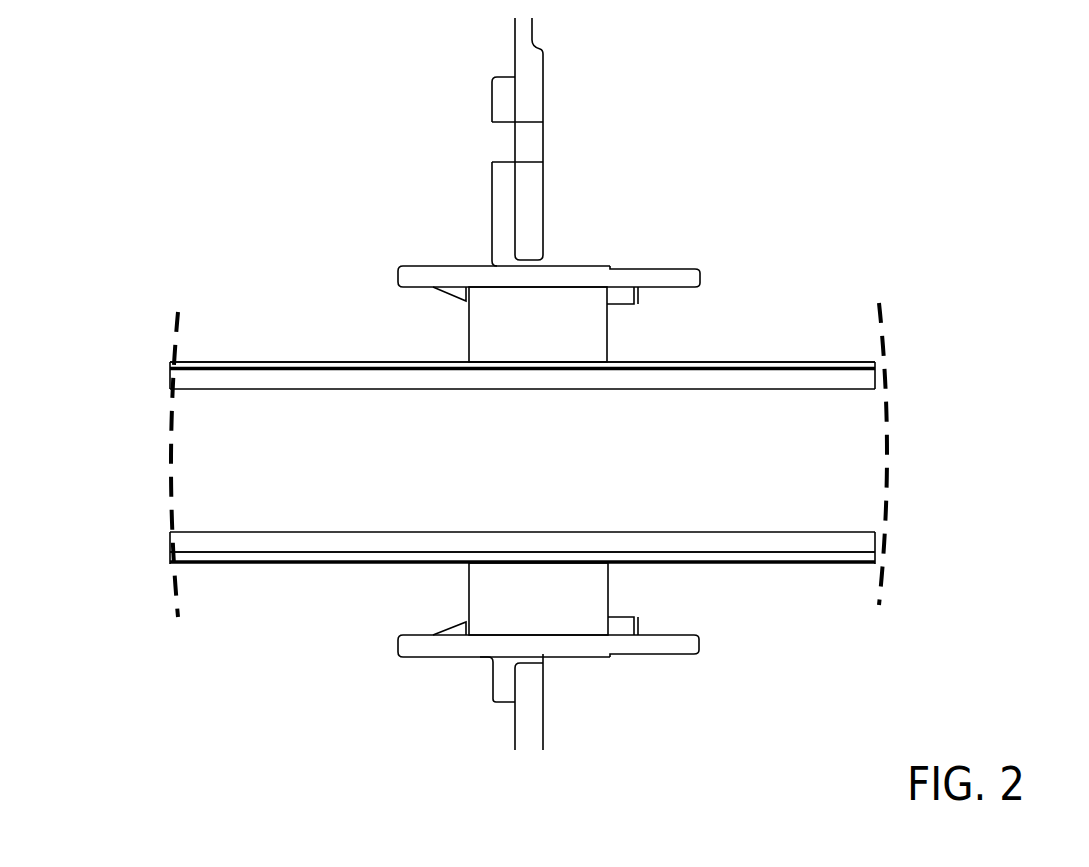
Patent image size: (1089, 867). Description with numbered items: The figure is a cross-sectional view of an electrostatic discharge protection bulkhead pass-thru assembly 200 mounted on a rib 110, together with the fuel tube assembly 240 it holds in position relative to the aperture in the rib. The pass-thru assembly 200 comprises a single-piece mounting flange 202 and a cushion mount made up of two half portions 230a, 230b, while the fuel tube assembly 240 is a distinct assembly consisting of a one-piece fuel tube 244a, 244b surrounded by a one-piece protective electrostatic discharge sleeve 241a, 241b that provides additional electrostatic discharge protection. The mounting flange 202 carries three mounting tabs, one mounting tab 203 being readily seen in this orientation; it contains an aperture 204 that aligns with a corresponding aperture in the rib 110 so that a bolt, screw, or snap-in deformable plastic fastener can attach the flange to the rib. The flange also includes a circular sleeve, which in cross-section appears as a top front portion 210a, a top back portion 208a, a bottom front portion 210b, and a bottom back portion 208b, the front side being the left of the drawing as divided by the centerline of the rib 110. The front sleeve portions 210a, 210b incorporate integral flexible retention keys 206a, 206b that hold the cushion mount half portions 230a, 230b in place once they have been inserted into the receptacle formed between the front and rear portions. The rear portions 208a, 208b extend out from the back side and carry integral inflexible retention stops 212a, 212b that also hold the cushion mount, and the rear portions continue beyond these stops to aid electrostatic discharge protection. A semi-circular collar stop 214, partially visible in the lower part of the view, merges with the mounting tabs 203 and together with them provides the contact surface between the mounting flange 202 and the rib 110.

The rib 110 is at (543, 90).
The electrostatic discharge protection bulkhead pass-thru assembly 200 is at (266, 149).
The mounting flange 202 is at (491, 227).
The mounting tab 203 is at (490, 114).
The aperture 204 is at (532, 147).
The flexible retention key 206a is at (452, 302).
The flexible retention key 206b is at (462, 627).
The top, back portion of the sleeve 208a is at (650, 268).
The bottom, back portion of the sleeve 208b is at (662, 655).
The top, front portion of the sleeve 210a is at (443, 266).
The bottom, front portion of the sleeve 210b is at (400, 652).
The inflexible retention stop 212a is at (638, 304).
The inflexible retention stop 212b is at (638, 625).
The collar stop 214 is at (492, 683).
The cushion mount half portion 230a is at (607, 340).
The cushion mount half portion 230b is at (610, 603).
The fuel tube assembly 240 is at (922, 451).
The protective electrostatic discharge sleeve 241a is at (297, 361).
The protective electrostatic discharge sleeve 241b is at (325, 565).
The fuel tube 244a is at (192, 381).
The fuel tube 244b is at (203, 545).